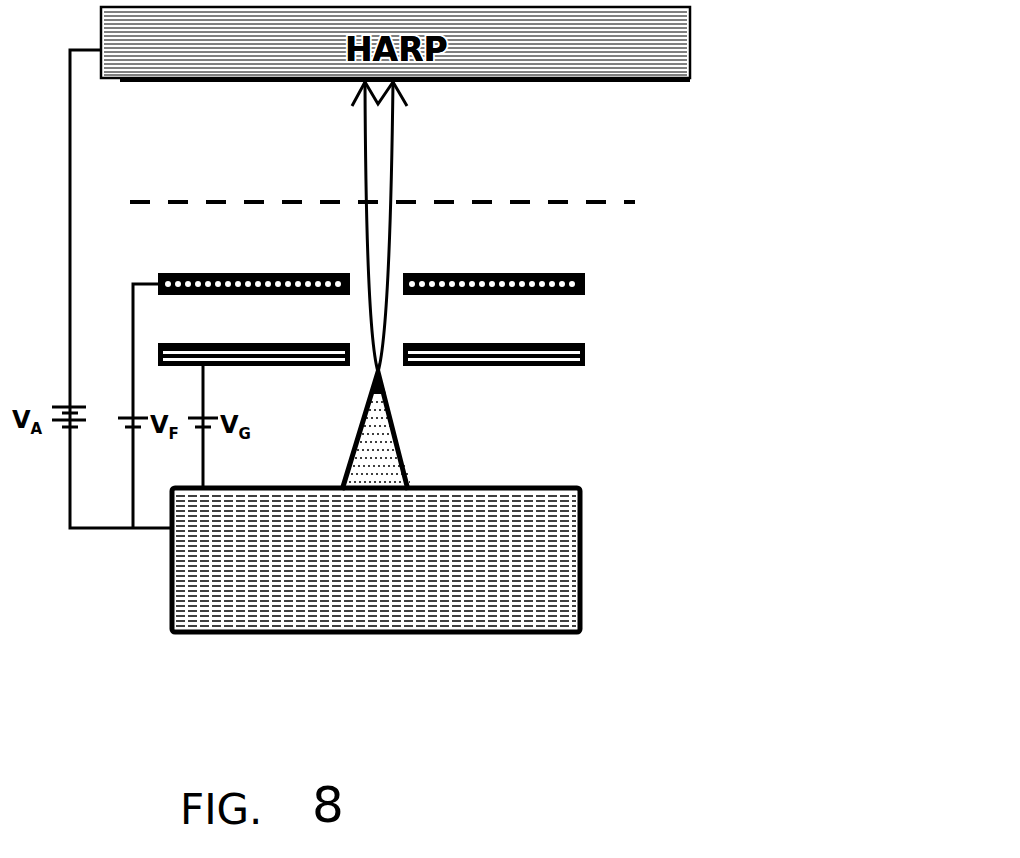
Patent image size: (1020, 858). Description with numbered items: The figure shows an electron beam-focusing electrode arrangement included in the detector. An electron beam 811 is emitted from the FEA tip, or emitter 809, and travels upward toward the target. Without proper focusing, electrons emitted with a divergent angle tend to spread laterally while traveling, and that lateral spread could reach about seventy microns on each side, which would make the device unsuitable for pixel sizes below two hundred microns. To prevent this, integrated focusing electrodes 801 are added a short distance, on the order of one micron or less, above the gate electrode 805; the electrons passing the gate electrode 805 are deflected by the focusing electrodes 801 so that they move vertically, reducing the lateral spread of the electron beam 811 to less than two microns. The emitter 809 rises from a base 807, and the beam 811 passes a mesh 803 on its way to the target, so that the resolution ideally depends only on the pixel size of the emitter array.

The integrated focusing electrodes 801 is at (647, 282).
The mesh 803 is at (806, 204).
The gate electrode 805 is at (637, 352).
The substrate 807 is at (598, 546).
The FEA tip (emitter) 809 is at (537, 420).
The electron beam (FEB) 811 is at (510, 162).